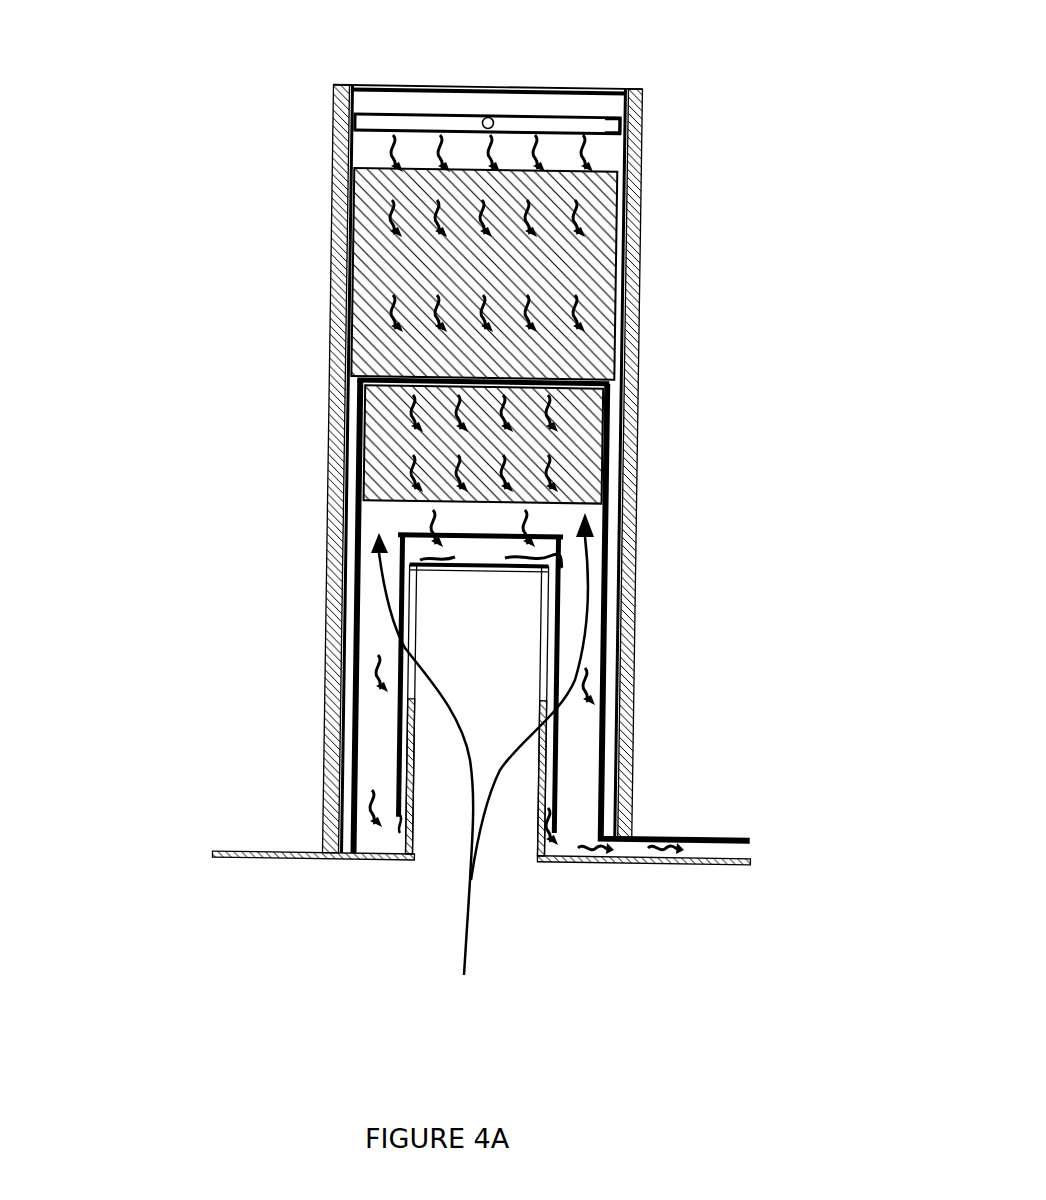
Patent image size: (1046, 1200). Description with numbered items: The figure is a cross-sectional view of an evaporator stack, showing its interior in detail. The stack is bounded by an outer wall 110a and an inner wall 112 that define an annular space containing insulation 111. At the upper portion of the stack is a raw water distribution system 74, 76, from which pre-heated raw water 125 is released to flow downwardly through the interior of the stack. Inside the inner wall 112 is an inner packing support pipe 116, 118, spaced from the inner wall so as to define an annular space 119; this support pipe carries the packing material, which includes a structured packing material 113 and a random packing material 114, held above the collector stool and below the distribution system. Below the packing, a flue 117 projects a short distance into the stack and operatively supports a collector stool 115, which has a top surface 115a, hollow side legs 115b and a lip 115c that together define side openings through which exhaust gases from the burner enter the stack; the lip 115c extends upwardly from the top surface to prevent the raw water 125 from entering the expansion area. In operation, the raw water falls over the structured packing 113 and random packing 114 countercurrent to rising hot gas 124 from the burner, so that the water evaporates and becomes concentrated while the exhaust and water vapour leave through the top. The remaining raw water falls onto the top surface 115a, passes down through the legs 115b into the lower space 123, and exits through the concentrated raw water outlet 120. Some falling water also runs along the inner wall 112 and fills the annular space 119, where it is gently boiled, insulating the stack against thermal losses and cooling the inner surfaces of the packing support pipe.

The raw water distribution system 74 is at (490, 117).
The raw water distribution system 76 is at (607, 115).
The outer wall 110a is at (648, 248).
The insulation 111 is at (352, 160).
The inner wall 112 is at (355, 100).
The structured packing material 113 is at (452, 258).
The random packing material 114 is at (455, 449).
The collector stool 115 is at (457, 550).
The top surface 115a is at (482, 565).
The hollow side legs 115b is at (415, 700).
The lip 115c is at (560, 558).
The inner packing support pipe 116 is at (405, 648).
The flue 117 is at (402, 840).
The inner packing support pipe 118 is at (607, 408).
The annular space 119 is at (612, 510).
The concentrated raw water outlet 120 is at (712, 850).
The lower space 123 is at (585, 770).
The rising hot gas 124 is at (466, 908).
The raw water 125 is at (600, 147).